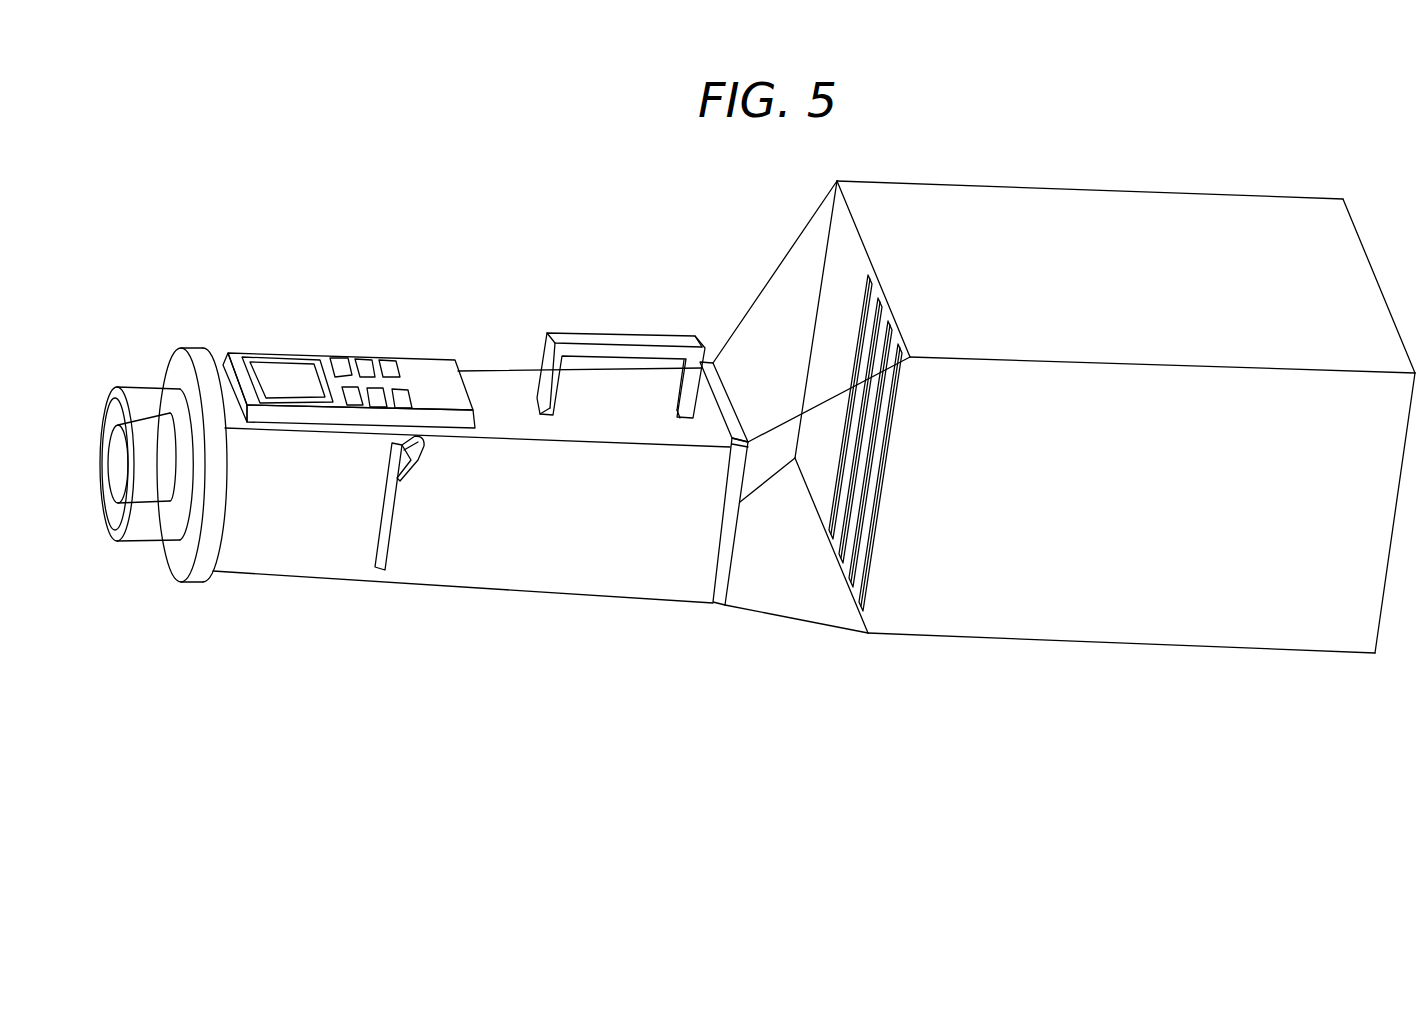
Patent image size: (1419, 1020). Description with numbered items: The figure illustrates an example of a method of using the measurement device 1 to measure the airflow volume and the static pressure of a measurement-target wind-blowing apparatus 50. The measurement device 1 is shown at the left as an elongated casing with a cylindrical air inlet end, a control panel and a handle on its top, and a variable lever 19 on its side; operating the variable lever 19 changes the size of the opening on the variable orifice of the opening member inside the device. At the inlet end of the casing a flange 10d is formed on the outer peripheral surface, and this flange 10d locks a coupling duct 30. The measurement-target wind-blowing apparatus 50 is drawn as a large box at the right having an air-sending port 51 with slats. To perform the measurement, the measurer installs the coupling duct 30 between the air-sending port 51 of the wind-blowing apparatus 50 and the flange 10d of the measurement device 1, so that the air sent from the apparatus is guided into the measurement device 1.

The measurement device 1 is at (480, 600).
The variable lever 19 is at (410, 482).
The flange 10d is at (717, 603).
The coupling duct 30 is at (783, 560).
The measurement-target wind-blowing apparatus 50 is at (1122, 535).
The air-sending port 51 is at (877, 588).